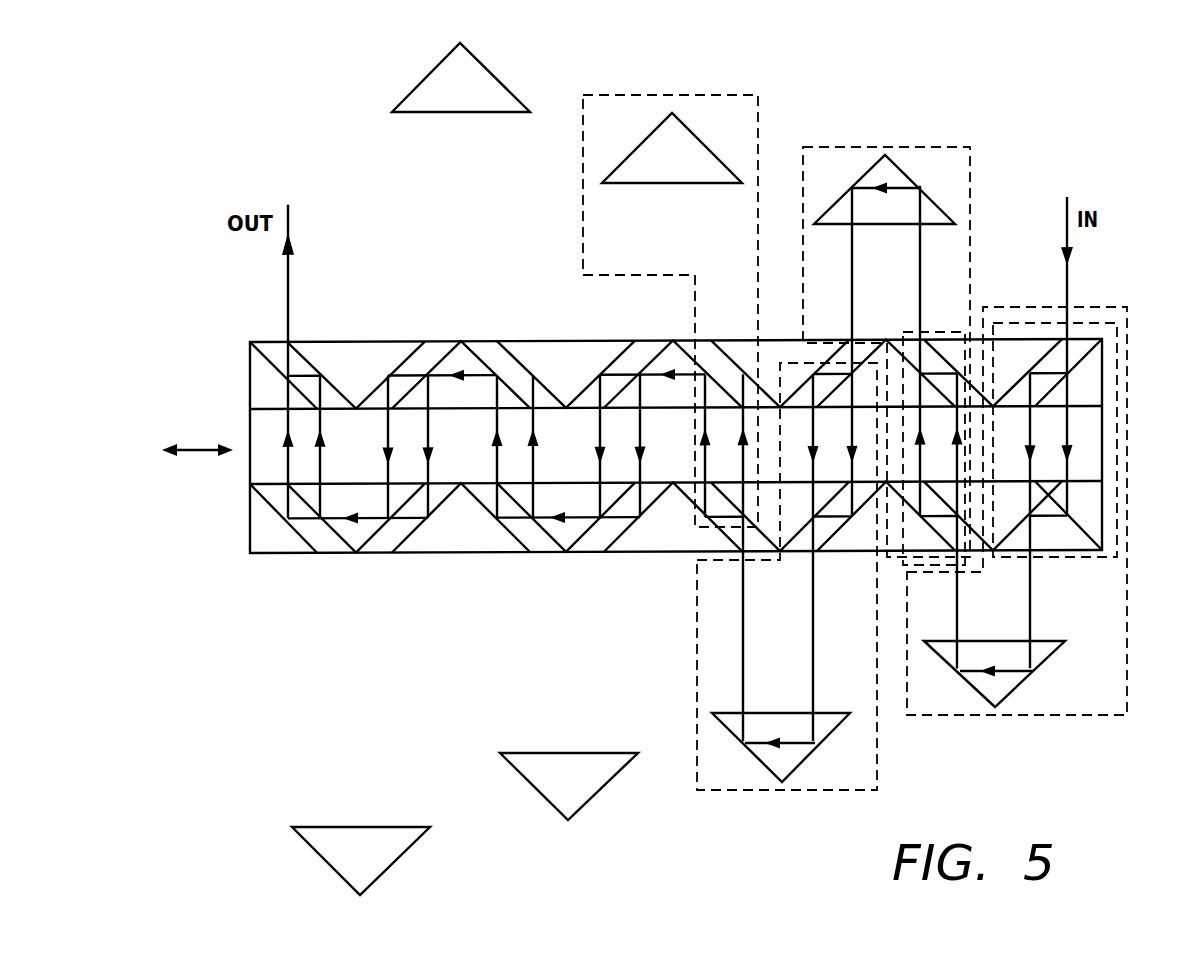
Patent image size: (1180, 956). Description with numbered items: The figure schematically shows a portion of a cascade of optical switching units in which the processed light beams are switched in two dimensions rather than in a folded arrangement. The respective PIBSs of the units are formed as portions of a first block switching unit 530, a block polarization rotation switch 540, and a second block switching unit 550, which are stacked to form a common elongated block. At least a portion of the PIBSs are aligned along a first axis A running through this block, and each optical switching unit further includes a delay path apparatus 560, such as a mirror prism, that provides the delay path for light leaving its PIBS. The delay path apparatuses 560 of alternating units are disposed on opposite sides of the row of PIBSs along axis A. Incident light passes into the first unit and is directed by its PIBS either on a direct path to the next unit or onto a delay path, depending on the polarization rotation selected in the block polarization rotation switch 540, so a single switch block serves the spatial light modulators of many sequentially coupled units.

The first block switching unit 530 is at (1103, 367).
The block polarization rotation switch 540 is at (1095, 433).
The second block switching unit 550 is at (1095, 515).
The delay path apparatus 560 is at (423, 78).
The first axis A is at (203, 457).